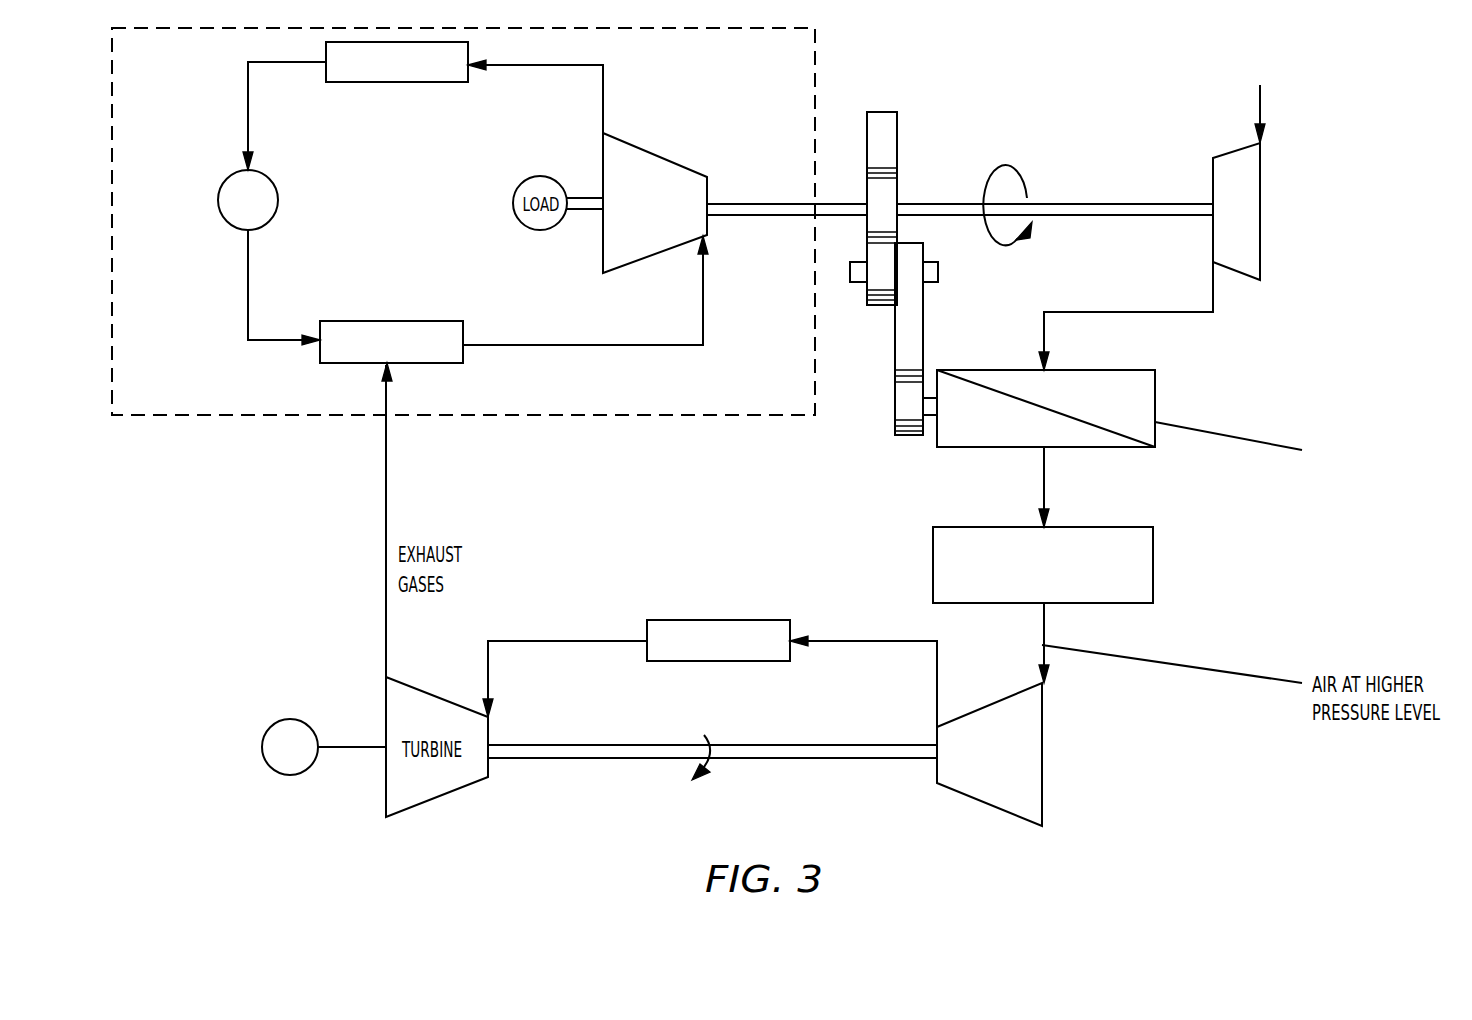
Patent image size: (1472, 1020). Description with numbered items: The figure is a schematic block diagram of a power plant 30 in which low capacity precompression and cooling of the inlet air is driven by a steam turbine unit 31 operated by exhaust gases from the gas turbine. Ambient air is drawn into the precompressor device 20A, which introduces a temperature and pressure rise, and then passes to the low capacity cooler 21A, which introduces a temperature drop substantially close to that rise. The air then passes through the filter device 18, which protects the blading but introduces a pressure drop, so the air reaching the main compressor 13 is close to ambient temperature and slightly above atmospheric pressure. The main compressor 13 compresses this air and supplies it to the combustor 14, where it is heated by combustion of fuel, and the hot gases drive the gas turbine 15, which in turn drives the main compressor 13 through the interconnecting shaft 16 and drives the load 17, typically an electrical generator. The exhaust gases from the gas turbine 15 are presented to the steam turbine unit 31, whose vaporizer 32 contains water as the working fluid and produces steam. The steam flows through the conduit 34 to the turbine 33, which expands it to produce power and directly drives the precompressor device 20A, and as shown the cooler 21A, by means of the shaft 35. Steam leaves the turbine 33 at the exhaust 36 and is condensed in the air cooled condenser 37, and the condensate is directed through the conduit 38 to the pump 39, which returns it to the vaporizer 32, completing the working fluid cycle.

The main compressor 13 is at (1042, 732).
The combustor 14 is at (722, 620).
The gas turbine 15 is at (488, 722).
The interconnecting shaft 16 is at (600, 760).
The load 17 is at (290, 775).
The filter device 18 is at (1153, 550).
The precompressor device 20A is at (1260, 272).
The low capacity cooler 21A is at (1155, 385).
The power plant 30 is at (988, 106).
The steam turbine unit 31 is at (222, 417).
The vaporizer 32 is at (440, 363).
The turbine 33 is at (652, 258).
The conduit 34 is at (598, 345).
The shaft 35 is at (755, 216).
The exhaust 36 is at (603, 110).
The condenser 37 is at (447, 82).
The conduit 38 is at (248, 87).
The pump 39 is at (276, 196).